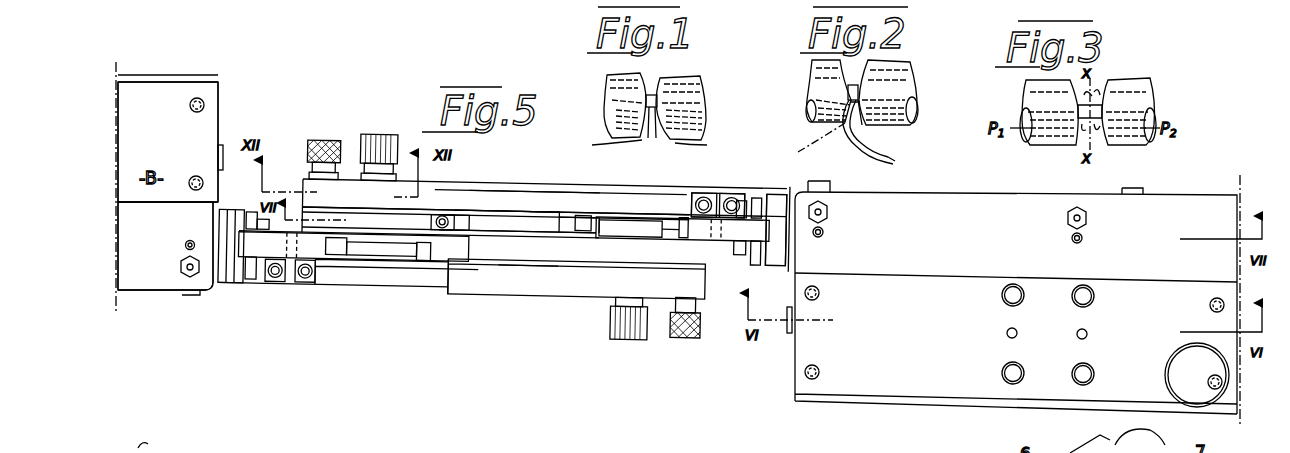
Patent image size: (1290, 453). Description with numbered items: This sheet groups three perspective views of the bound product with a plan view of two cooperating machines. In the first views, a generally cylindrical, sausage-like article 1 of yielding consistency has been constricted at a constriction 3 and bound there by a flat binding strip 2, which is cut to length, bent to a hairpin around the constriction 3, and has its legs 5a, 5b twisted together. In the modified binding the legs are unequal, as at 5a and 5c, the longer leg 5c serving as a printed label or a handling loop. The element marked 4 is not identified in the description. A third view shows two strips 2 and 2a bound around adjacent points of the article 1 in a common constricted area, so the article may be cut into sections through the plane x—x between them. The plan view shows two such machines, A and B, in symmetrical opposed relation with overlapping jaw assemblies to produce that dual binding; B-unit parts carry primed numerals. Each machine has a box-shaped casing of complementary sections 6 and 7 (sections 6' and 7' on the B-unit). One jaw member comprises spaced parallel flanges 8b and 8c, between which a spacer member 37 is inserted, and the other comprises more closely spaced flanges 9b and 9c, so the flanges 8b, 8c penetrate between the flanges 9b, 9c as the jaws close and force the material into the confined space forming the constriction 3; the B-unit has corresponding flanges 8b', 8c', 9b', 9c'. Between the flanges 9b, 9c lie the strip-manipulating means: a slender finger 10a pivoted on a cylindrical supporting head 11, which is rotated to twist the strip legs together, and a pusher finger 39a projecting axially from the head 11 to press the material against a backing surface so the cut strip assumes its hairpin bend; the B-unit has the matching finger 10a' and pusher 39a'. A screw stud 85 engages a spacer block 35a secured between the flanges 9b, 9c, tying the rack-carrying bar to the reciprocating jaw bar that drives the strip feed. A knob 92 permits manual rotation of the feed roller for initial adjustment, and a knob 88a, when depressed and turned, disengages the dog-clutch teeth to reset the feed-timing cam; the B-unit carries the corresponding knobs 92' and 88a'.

In FIG. 1, the article 1 is at (700, 122).
In FIG. 2, the article 1 is at (893, 80).
In FIG. 3, the article 1 is at (1127, 85).
In FIG. 1, the binding strip 2 is at (655, 100).
In FIG. 2, the binding strip 2 is at (853, 85).
In FIG. 3, the binding strip 2 is at (1082, 105).
In FIG. 3, the second binding strip 2a is at (1100, 120).
In FIG. 1, the constriction 3 is at (650, 96).
In FIG. 2, the constriction 3 is at (870, 100).
In FIG. 1, the second clamping jaw 4 is at (623, 112).
In FIG. 2, the second clamping jaw 4 is at (823, 100).
In FIG. 1, the strip leg 5a is at (604, 142).
In FIG. 2, the strip leg 5a is at (837, 125).
In FIG. 1, the strip leg 5b is at (703, 147).
In FIG. 2, the longer strip leg 5c is at (883, 155).
In FIG. 5, the casing section 6 is at (1016, 286).
In FIG. 5, the casing section of B-unit 6' is at (165, 269).
In FIG. 5, the casing section 7 is at (1012, 321).
In FIG. 5, the casing section of B-unit 7' is at (181, 142).
In FIG. 5, the jaw flange 8b is at (506, 192).
In FIG. 5, the jaw flange of B-unit 8b' is at (528, 299).
In FIG. 5, the jaw flange 8c is at (525, 197).
In FIG. 5, the jaw flange of B-unit 8c' is at (535, 160).
In FIG. 5, the jaw flange 9b is at (546, 196).
In FIG. 5, the jaw flange of B-unit 9b' is at (473, 299).
In FIG. 5, the jaw flange 9c is at (579, 198).
In FIG. 5, the jaw flange of B-unit 9c' is at (452, 198).
In FIG. 5, the manipulator finger 10a is at (682, 205).
In FIG. 5, the manipulator finger of B-unit 10a' is at (371, 284).
In FIG. 5, the supporting head 11 is at (682, 212).
In FIG. 5, the spacer block 35a is at (733, 227).
In FIG. 5, the spacer member 37 is at (685, 257).
In FIG. 5, the pusher finger 39a is at (611, 200).
In FIG. 5, the pusher finger of B-unit 39a' is at (439, 288).
In FIG. 5, the screw stud 85 is at (722, 200).
In FIG. 5, the knob 88a is at (324, 140).
In FIG. 5, the knob of B-unit 88a' is at (696, 336).
In FIG. 5, the knob 92 is at (379, 141).
In FIG. 5, the knob of B-unit 92' is at (629, 335).